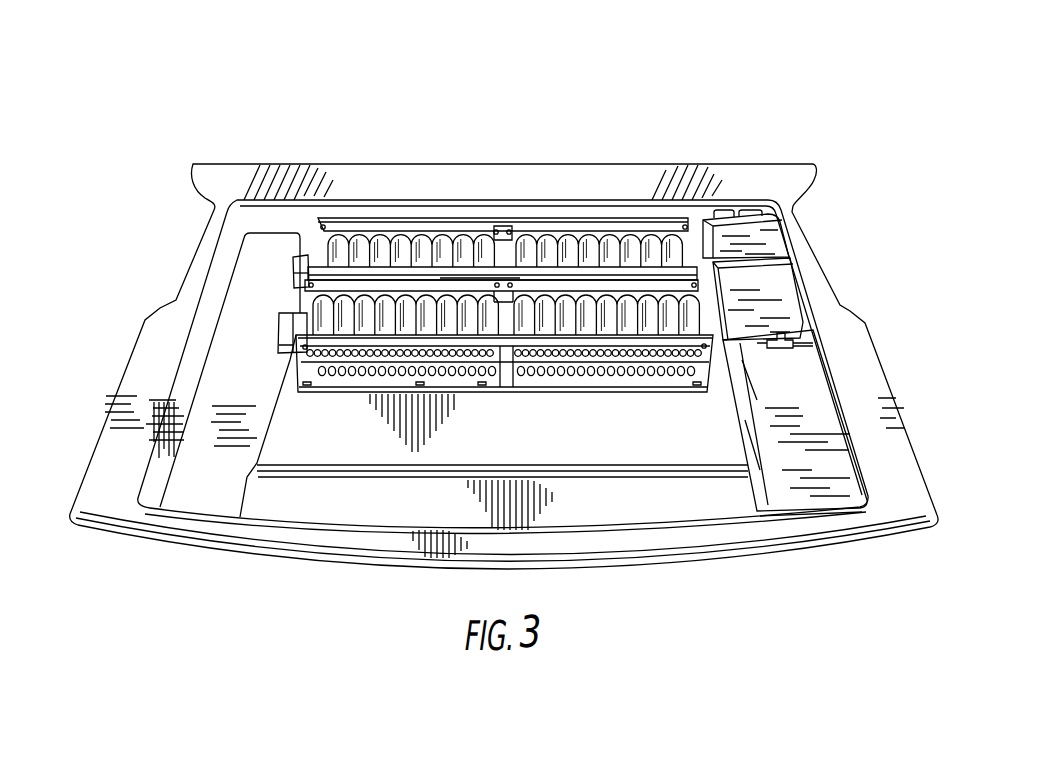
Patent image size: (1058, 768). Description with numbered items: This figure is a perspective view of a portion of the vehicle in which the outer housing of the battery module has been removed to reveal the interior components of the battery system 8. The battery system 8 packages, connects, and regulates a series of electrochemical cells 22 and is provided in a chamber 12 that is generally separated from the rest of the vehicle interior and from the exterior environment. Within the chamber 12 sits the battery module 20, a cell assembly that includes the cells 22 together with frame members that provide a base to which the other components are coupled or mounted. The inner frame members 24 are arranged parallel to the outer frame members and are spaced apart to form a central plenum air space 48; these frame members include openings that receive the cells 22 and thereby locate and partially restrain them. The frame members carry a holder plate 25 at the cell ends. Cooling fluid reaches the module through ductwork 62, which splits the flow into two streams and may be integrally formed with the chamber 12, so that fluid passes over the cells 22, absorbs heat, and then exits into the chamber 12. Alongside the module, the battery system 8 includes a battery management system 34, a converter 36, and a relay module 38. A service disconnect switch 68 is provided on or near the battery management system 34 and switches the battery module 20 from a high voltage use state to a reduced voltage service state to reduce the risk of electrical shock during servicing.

The battery system 8 is at (813, 97).
The chamber 12 is at (597, 441).
The battery module 20 is at (323, 188).
The electrochemical cells 22 is at (568, 322).
The inner frame members 24 is at (548, 285).
The holder plate 25 is at (384, 232).
The battery management system 34 is at (782, 292).
The converter 36 is at (824, 414).
The relay module 38 is at (775, 240).
The central plenum air space 48 is at (465, 272).
The ductwork 62 is at (289, 321).
The service disconnect switch 68 is at (792, 338).